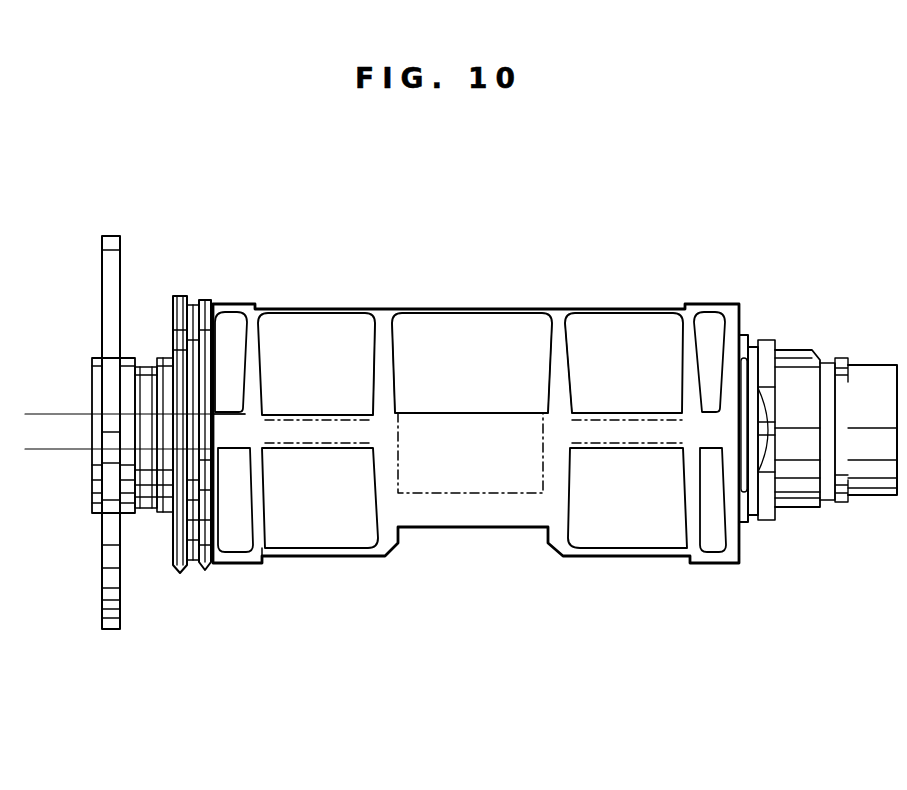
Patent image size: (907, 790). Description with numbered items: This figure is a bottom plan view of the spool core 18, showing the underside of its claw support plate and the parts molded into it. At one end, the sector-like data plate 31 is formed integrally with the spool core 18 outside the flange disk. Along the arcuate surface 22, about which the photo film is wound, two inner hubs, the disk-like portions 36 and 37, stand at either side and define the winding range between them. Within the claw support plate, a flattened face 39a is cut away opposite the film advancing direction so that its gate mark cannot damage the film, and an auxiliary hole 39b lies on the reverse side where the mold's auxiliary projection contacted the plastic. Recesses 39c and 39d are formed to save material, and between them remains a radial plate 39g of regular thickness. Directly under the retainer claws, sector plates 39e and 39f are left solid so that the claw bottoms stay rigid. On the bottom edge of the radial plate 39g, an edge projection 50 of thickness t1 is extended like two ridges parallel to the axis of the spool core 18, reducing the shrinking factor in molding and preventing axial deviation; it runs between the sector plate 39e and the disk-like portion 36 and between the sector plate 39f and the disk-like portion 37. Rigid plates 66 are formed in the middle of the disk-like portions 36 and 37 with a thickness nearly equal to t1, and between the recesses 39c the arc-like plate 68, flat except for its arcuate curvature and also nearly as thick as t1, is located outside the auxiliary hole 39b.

The spool core 18 is at (878, 345).
The arcuate surface 22 is at (433, 507).
The sector-like data plate 31 is at (106, 580).
The disk-like portion 36 is at (233, 566).
The disk-like portion 37 is at (716, 565).
The flattened face 39a is at (485, 530).
The auxiliary hole 39b is at (398, 440).
The recess 39c is at (347, 533).
The recess 39d is at (315, 311).
The sector plate 39e is at (383, 347).
The sector plate 39f is at (555, 357).
The radial plate 39g is at (306, 448).
The edge projection 50 is at (315, 412).
The rigid plate 66 is at (232, 420).
The arc-like plate 68 is at (495, 420).
The thickness of edge projection t1 is at (41, 380).